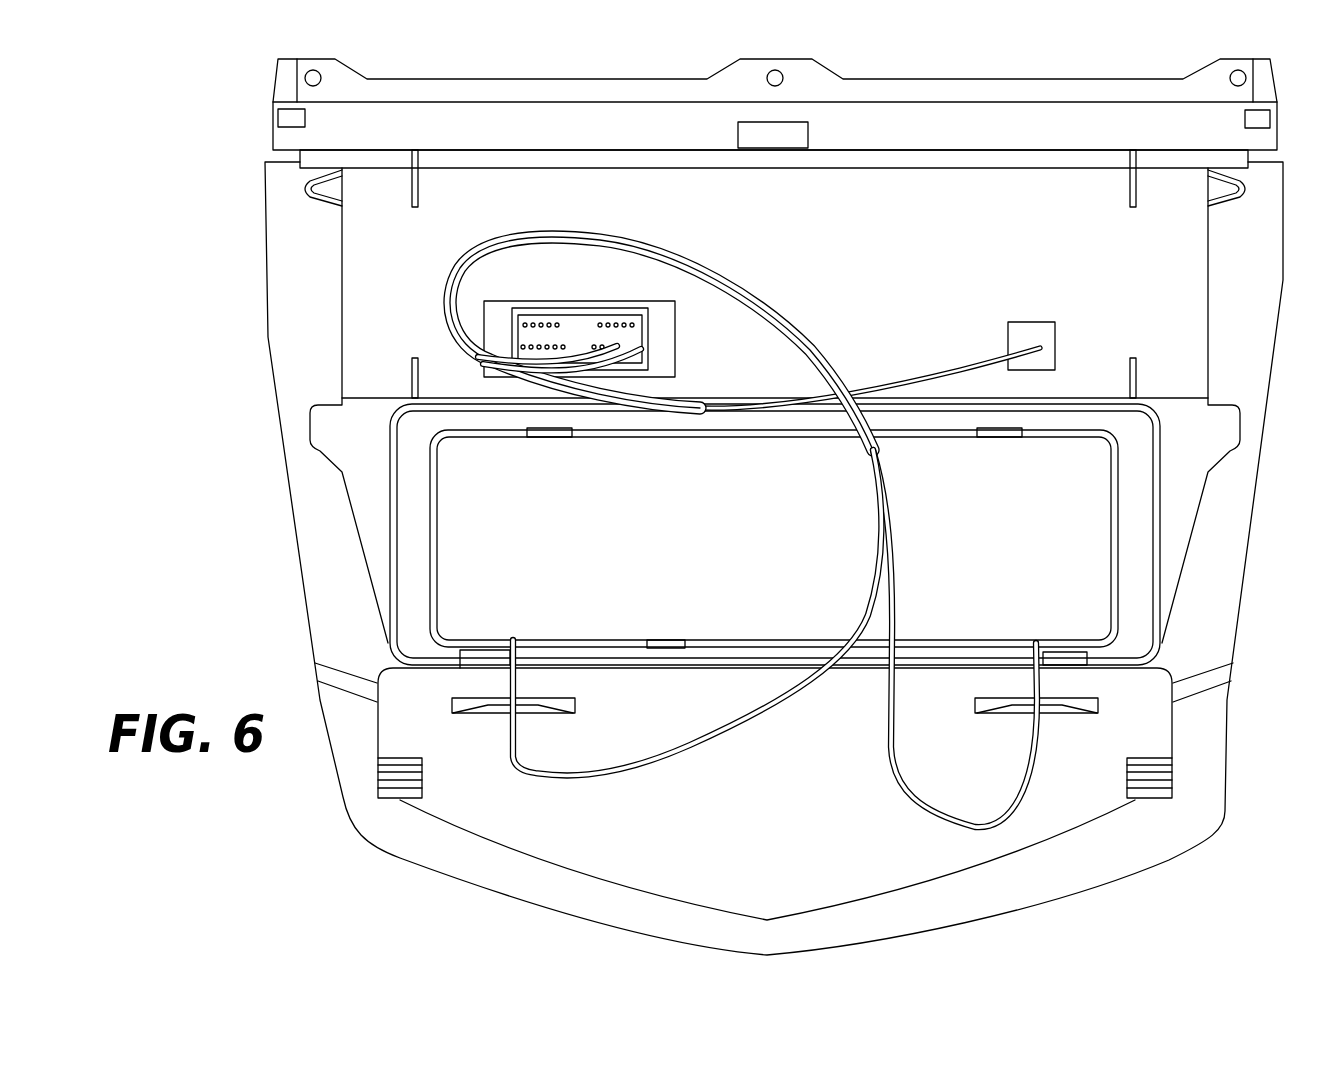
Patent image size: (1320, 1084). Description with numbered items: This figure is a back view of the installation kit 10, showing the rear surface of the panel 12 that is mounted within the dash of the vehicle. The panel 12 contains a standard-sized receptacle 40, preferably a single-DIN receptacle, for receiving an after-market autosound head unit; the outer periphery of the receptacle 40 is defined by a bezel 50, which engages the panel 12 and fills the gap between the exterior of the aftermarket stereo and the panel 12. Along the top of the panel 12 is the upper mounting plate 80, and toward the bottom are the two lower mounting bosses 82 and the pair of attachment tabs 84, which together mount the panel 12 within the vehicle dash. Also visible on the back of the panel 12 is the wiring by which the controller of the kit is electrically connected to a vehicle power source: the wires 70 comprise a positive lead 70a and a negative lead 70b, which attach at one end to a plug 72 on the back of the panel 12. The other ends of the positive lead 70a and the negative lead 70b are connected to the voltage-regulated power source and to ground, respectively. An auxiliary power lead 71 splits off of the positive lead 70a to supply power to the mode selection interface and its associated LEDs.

The installation kit 10 is at (203, 197).
The panel 12 is at (292, 332).
The receptacle 40 is at (736, 602).
The bezel 50 is at (410, 512).
The wires 70 is at (803, 330).
The positive lead 70a is at (610, 345).
The negative lead 70b is at (634, 350).
The auxiliary power lead 71 is at (990, 368).
The plug 72 is at (525, 312).
The upper mounting plate 80 is at (888, 90).
The lower mounting bosses 82 is at (500, 708).
The attachment tabs 84 is at (388, 777).